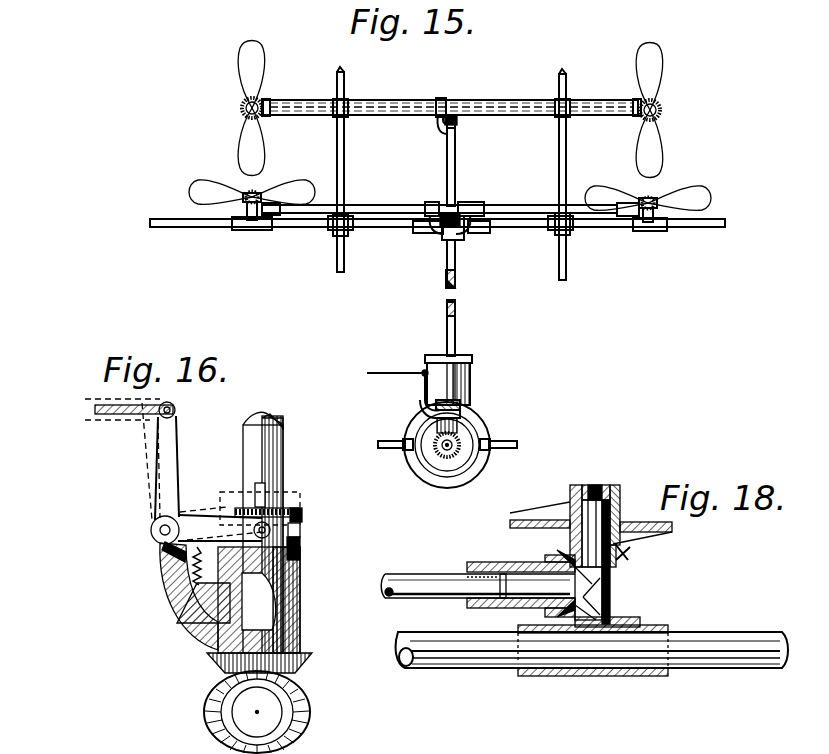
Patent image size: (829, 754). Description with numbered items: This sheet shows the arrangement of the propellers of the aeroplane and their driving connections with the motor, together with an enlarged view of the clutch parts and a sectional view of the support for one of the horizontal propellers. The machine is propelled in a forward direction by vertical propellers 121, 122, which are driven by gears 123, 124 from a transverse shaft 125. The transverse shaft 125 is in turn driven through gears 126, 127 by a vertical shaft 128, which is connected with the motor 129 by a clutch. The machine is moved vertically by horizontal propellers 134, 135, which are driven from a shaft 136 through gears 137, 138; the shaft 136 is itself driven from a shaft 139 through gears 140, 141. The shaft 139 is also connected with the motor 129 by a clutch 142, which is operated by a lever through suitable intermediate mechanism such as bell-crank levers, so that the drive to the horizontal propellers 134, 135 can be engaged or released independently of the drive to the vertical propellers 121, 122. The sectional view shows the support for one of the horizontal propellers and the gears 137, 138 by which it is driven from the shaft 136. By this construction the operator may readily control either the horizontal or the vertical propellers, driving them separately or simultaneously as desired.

In FIG. 15, the vertical propeller 121 is at (655, 68).
In FIG. 15, the vertical propeller 122 is at (252, 62).
In FIG. 15, the gear 123 is at (243, 115).
In FIG. 15, the gear 124 is at (268, 101).
In FIG. 15, the transverse shaft 125 is at (470, 101).
In FIG. 15, the gear 126 is at (441, 98).
In FIG. 15, the gear 127 is at (458, 120).
In FIG. 15, the vertical shaft 128 is at (457, 183).
In FIG. 15, the motor 129 is at (462, 396).
In FIG. 15, the horizontal propeller 134 is at (698, 190).
In FIG. 18, the horizontal propeller 134 is at (540, 524).
In FIG. 15, the horizontal propeller 135 is at (205, 185).
In FIG. 15, the shaft 136 is at (378, 206).
In FIG. 15, the gear 137 is at (248, 204).
In FIG. 18, the gear 137 is at (620, 545).
In FIG. 15, the gear 138 is at (256, 218).
In FIG. 18, the gear 138 is at (570, 563).
In FIG. 15, the shaft 139 is at (456, 266).
In FIG. 15, the gear 140 is at (460, 208).
In FIG. 15, the gear 141 is at (438, 234).
In FIG. 15, the clutch 142 is at (456, 385).
In FIG. 16, the clutch 142 is at (300, 492).